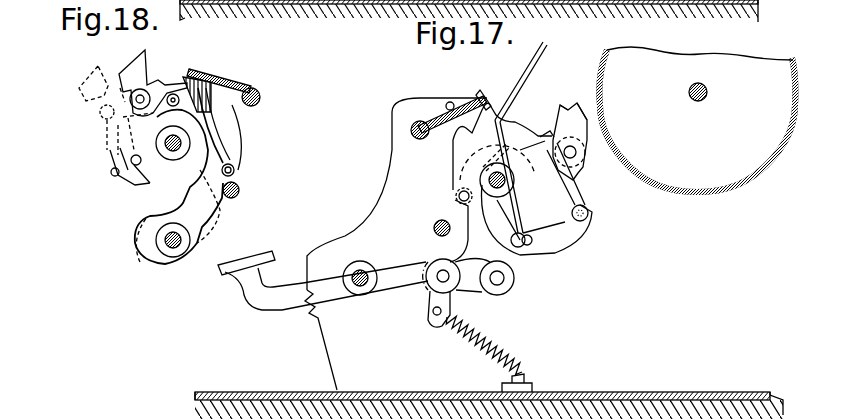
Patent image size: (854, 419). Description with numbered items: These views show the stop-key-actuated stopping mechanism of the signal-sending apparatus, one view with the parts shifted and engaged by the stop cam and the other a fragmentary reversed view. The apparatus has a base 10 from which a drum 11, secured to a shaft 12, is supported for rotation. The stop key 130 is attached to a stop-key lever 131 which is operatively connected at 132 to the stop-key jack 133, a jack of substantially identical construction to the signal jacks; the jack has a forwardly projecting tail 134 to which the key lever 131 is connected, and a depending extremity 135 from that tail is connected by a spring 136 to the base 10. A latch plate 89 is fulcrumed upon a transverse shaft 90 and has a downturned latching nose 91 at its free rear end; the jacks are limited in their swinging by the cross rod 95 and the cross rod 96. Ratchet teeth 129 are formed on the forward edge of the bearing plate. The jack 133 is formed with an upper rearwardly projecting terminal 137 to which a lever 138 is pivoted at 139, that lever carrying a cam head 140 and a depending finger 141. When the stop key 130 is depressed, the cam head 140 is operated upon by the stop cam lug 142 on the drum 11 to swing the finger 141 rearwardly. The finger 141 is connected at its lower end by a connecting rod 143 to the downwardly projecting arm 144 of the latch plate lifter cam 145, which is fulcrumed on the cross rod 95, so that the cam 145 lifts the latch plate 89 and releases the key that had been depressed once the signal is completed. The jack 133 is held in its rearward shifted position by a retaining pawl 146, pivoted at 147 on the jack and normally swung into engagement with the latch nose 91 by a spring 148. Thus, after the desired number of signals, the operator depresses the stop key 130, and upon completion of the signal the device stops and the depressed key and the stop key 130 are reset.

In FIG. 17, the base 10 is at (760, 10).
In FIG. 17, the drum 11 is at (803, 97).
In FIG. 17, the drum shaft 12 is at (708, 92).
In FIG. 18, the latch plate 89 is at (238, 81).
In FIG. 17, the latch plate 89 is at (433, 120).
In FIG. 18, the transverse shaft 90 is at (257, 92).
In FIG. 17, the transverse shaft 90 is at (412, 131).
In FIG. 17, the latching nose 91 is at (484, 102).
In FIG. 18, the cross rod 95 is at (180, 158).
In FIG. 17, the cross rod 95 is at (489, 182).
In FIG. 18, the cross rod 96 is at (240, 192).
In FIG. 17, the cross rod 96 is at (433, 231).
In FIG. 17, the ratchet teeth 129 is at (317, 337).
In FIG. 17, the stop key 130 is at (253, 259).
In FIG. 17, the stop-key lever 131 is at (272, 307).
In FIG. 17, the connection 132 is at (433, 280).
In FIG. 18, the stop-key jack 133 is at (193, 196).
In FIG. 17, the stop-key jack 133 is at (467, 157).
In FIG. 18, the tail 134 is at (199, 232).
In FIG. 17, the tail 134 is at (447, 259).
In FIG. 17, the depending extremity 135 is at (431, 327).
In FIG. 17, the spring 136 is at (477, 351).
In FIG. 17, the rearwardly projecting terminal 137 is at (535, 128).
In FIG. 17, the lever 138 is at (578, 160).
In FIG. 18, the pivot 139 is at (127, 100).
In FIG. 17, the pivot 139 is at (588, 146).
In FIG. 18, the cam head 140 is at (137, 67).
In FIG. 17, the cam head 140 is at (580, 107).
In FIG. 18, the depending finger 141 is at (127, 147).
In FIG. 17, the depending finger 141 is at (592, 212).
In FIG. 17, the stop cam lug 142 is at (597, 127).
In FIG. 18, the connecting rod 143 is at (127, 188).
In FIG. 17, the connecting rod 143 is at (570, 238).
In FIG. 17, the downwardly projecting arm 144 is at (522, 233).
In FIG. 17, the latch plate lifter cam 145 is at (532, 74).
In FIG. 18, the retaining pawl 146 is at (217, 100).
In FIG. 17, the retaining pawl 146 is at (517, 123).
In FIG. 18, the pivot 147 is at (192, 72).
In FIG. 17, the pivot 147 is at (522, 150).
In FIG. 18, the spring 148 is at (232, 150).
In FIG. 17, the spring 148 is at (455, 193).